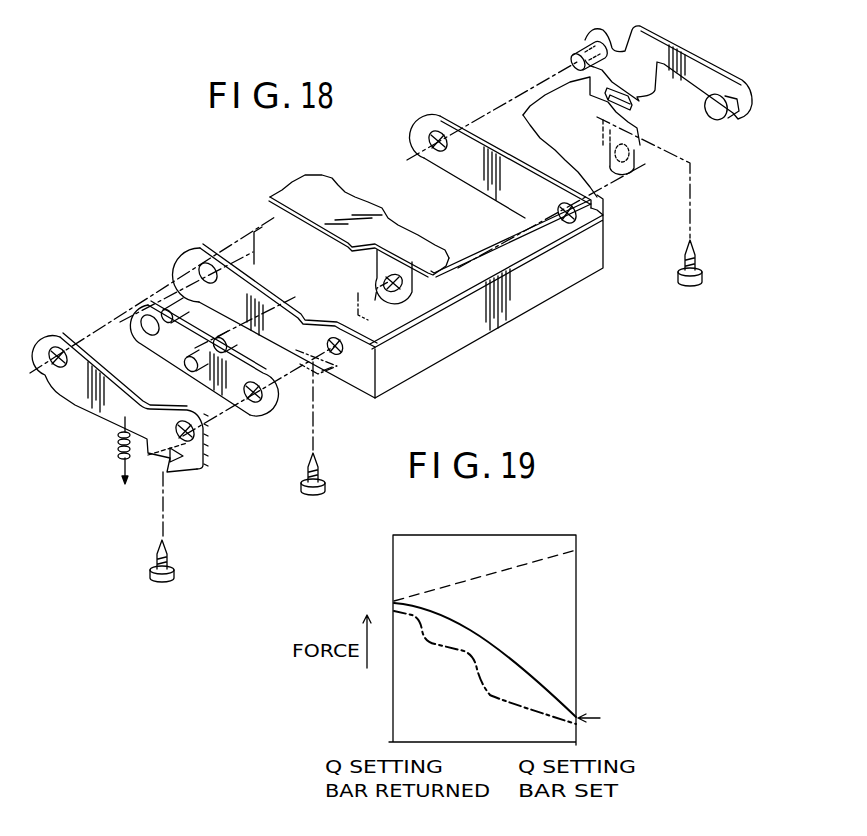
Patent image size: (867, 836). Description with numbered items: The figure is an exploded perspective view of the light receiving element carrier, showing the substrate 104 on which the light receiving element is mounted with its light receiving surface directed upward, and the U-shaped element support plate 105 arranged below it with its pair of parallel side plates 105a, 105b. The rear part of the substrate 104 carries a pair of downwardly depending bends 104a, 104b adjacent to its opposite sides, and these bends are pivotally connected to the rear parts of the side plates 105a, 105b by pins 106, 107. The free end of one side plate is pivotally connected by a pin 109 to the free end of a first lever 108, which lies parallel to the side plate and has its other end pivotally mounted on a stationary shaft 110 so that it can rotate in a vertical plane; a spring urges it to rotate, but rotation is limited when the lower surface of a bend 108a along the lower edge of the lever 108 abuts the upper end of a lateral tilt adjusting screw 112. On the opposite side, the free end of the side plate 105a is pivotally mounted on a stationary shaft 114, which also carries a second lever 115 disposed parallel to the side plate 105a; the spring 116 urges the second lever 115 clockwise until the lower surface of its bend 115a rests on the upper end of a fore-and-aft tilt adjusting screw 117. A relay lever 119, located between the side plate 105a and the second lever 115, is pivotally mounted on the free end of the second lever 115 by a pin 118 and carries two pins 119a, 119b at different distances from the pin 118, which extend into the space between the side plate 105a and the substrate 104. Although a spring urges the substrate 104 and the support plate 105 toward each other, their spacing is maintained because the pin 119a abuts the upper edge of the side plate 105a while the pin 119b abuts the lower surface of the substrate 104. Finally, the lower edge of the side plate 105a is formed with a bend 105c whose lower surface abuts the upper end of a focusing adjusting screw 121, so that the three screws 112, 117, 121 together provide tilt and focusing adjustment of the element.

The substrate 104 is at (340, 198).
The downwardly depending bend 104a is at (403, 288).
The downwardly depending bend 104b is at (634, 170).
The element support plate 105 is at (456, 336).
The side plate 105a is at (272, 313).
The side plate 105b is at (482, 191).
The bend 105c is at (318, 384).
The pin 106 is at (358, 310).
The pin 107 is at (601, 197).
The first lever 108 is at (645, 24).
The bend 108a is at (633, 101).
The pin 109 is at (572, 60).
The stationary shaft 110 is at (716, 119).
The lateral tilt adjusting screw 112 is at (673, 264).
The stationary shaft 114 is at (116, 320).
The second lever 115 is at (105, 418).
The bend 115a is at (174, 464).
The spring 116 is at (118, 453).
The fore-and-aft tilt adjusting screw 117 is at (154, 556).
The pin 118 is at (208, 418).
The relay lever 119 is at (170, 357).
The pin 119a is at (228, 340).
The pin 119b is at (170, 305).
The focusing adjusting screw 121 is at (332, 458).